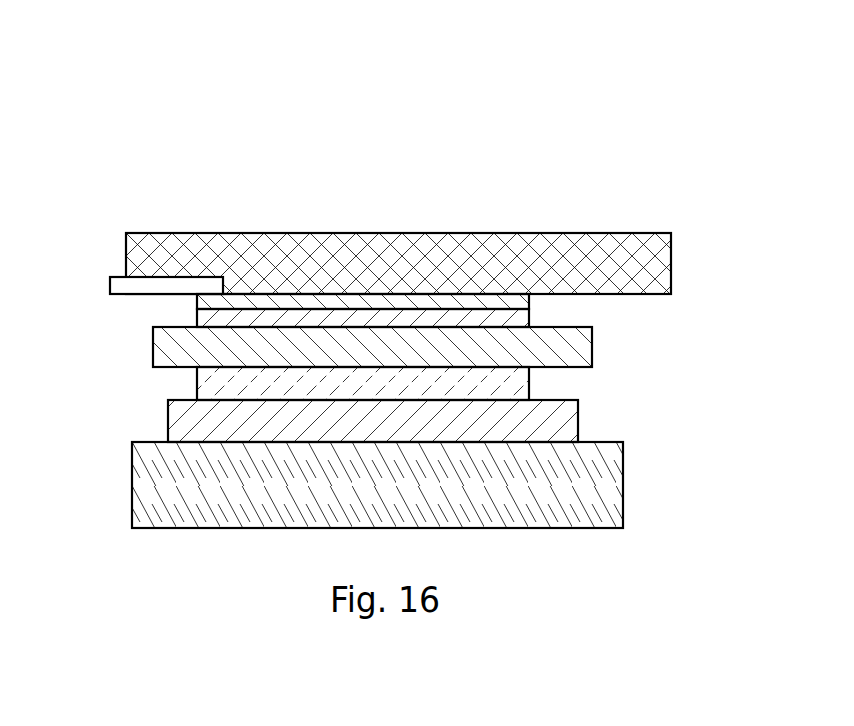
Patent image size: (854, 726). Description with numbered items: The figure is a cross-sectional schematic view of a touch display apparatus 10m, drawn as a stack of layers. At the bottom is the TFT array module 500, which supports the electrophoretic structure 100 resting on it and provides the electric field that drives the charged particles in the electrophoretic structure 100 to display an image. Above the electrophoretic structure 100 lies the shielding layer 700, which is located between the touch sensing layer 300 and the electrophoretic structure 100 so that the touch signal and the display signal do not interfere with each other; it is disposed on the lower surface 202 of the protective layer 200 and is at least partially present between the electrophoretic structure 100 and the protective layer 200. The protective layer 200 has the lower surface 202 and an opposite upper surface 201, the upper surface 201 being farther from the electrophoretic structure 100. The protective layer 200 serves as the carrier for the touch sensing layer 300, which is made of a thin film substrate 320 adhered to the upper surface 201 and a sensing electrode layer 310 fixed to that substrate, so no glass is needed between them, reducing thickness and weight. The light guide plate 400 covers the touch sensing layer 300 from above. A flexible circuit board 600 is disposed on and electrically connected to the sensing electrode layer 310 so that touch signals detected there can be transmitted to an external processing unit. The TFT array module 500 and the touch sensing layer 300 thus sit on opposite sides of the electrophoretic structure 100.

The touch display apparatus 10m is at (93, 53).
The electrophoretic structure 100 is at (560, 425).
The protective layer 200 is at (372, 351).
The upper surface 201 is at (163, 327).
The lower surface 202 is at (153, 367).
The touch sensing layer 300 is at (420, 218).
The sensing electrode layer 310 is at (476, 302).
The thin film substrate 320 is at (507, 320).
The light guide plate 400 is at (650, 266).
The TFT array module 500 is at (600, 493).
The flexible circuit board 600 is at (163, 287).
The shielding layer 700 is at (515, 388).